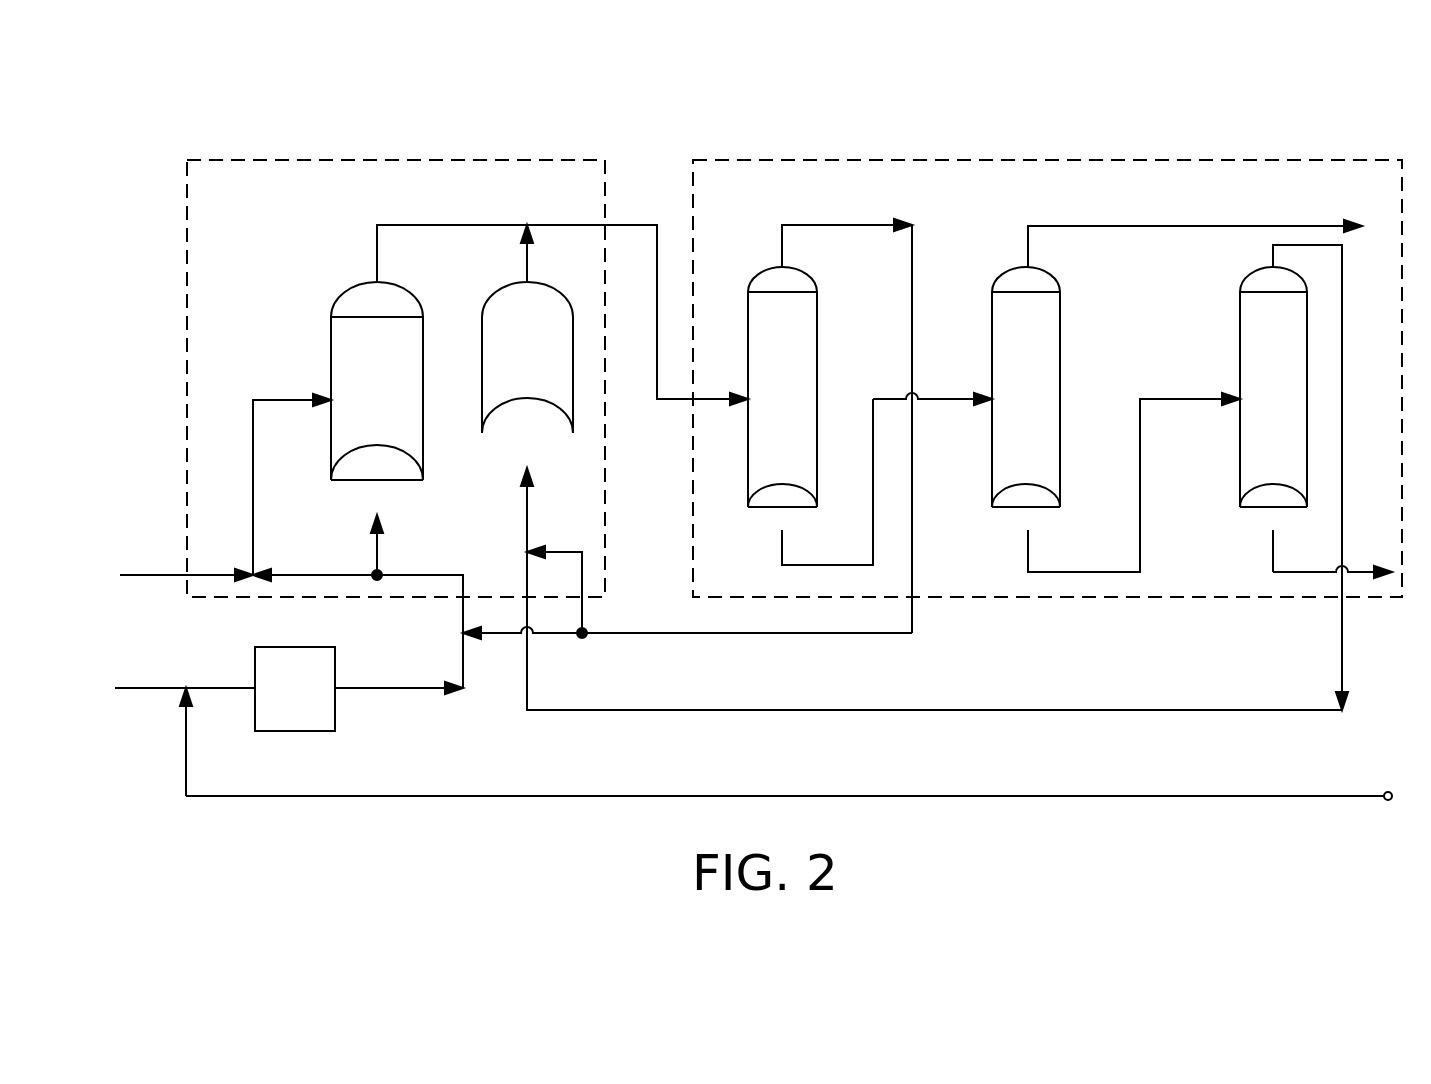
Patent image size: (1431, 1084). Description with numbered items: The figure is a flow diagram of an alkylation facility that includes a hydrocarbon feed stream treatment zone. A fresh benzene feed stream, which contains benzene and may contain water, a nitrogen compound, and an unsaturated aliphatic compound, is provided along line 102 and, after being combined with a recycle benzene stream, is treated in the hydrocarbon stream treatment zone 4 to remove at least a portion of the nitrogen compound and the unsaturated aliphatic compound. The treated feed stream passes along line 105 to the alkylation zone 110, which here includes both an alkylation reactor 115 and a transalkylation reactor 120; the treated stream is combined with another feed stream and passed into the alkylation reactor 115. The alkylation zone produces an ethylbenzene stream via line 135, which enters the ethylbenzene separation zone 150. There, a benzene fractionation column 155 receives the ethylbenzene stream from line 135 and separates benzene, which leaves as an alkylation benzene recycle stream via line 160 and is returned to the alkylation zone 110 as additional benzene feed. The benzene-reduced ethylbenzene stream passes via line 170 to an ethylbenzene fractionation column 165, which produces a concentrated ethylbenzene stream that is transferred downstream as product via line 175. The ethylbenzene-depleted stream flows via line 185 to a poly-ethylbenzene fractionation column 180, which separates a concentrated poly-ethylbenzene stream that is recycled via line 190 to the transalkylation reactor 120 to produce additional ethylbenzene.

The hydrocarbon stream treatment zone 4 is at (297, 647).
The line 102 is at (143, 688).
The line 105 is at (398, 688).
The alkylation zone 110 is at (187, 241).
The alkylation reactor 115 is at (352, 286).
The transalkylation reactor 120 is at (509, 286).
The line 135 is at (570, 225).
The ethylbenzene separation zone 150 is at (1347, 160).
The benzene fractionation column 155 is at (772, 268).
The line 160 is at (838, 225).
The ethylbenzene fractionation column 165 is at (1010, 268).
The line 170 is at (945, 400).
The line 175 is at (1158, 226).
The poly-ethylbenzene fractionation column 180 is at (1252, 271).
The line 185 is at (1158, 399).
The line 190 is at (1175, 714).